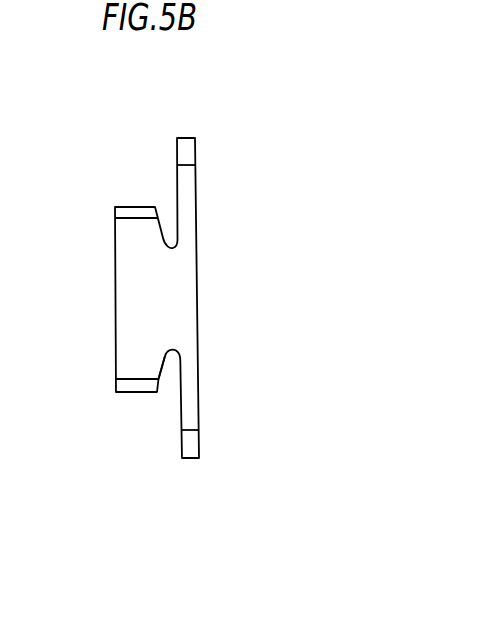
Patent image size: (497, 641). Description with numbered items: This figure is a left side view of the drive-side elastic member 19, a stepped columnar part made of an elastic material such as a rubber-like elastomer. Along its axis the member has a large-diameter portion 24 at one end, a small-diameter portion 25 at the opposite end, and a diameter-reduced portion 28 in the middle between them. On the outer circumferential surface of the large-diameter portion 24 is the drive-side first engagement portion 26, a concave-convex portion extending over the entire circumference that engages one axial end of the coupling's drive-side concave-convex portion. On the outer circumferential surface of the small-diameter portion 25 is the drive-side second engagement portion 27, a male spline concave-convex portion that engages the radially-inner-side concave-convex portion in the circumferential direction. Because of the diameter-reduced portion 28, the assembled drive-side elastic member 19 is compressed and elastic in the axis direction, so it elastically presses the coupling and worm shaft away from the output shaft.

The drive-side elastic member 19 is at (180, 295).
The large-diameter portion 24 is at (197, 410).
The small-diameter portion 25 is at (125, 333).
The drive-side first engagement portion 26 is at (188, 143).
The drive-side second engagement portion 27 is at (138, 212).
The diameter-reduced portion 28 is at (177, 357).